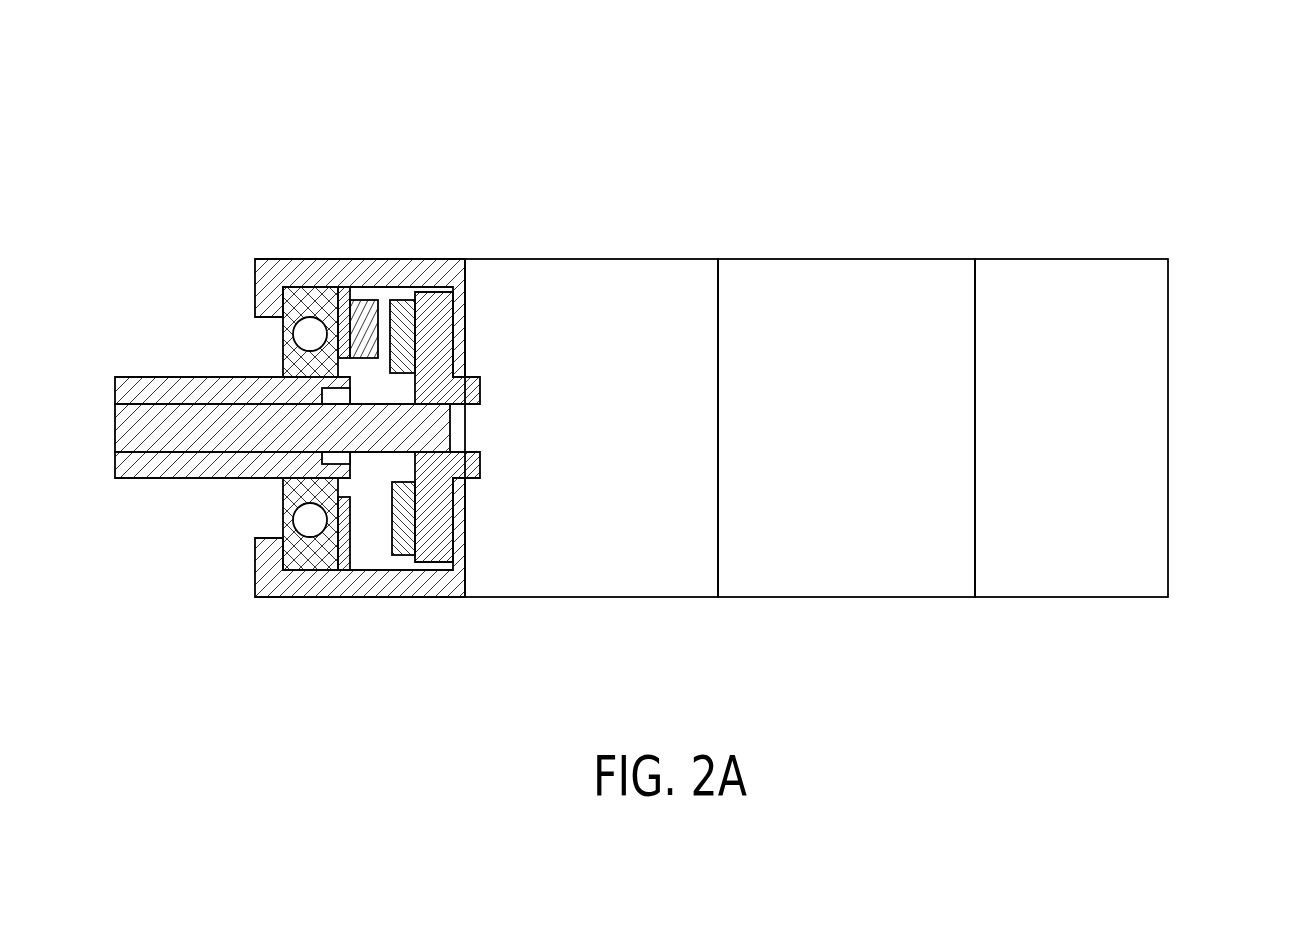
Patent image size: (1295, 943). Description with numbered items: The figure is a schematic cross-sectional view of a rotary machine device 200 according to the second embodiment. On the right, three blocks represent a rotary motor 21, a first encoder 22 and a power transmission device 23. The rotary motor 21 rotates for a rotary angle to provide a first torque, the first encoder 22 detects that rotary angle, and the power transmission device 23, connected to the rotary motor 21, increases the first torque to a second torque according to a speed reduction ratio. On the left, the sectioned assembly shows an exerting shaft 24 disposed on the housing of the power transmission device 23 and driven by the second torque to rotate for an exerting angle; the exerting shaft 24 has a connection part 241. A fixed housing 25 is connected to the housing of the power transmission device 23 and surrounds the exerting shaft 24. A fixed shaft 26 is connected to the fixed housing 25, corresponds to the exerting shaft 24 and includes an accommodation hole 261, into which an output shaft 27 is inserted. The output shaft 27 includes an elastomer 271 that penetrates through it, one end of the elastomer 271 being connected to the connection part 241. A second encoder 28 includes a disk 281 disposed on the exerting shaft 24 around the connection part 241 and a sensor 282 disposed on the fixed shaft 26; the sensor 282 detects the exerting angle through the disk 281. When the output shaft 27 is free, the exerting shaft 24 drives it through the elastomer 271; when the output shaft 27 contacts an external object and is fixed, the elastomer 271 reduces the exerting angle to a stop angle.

The rotary machine device 200 is at (1238, 85).
The rotary motor 21 is at (857, 292).
The first encoder 22 is at (1050, 268).
The power transmission device 23 is at (590, 292).
The exerting shaft 24 is at (468, 421).
The connection part 241 is at (433, 452).
The fixed housing 25 is at (308, 270).
The fixed shaft 26 is at (292, 300).
The accommodation hole 261 is at (283, 375).
The output shaft 27 is at (280, 370).
The elastomer 271 is at (187, 427).
The second encoder 28 is at (401, 337).
The disk 281 is at (430, 300).
The sensor 282 is at (363, 300).